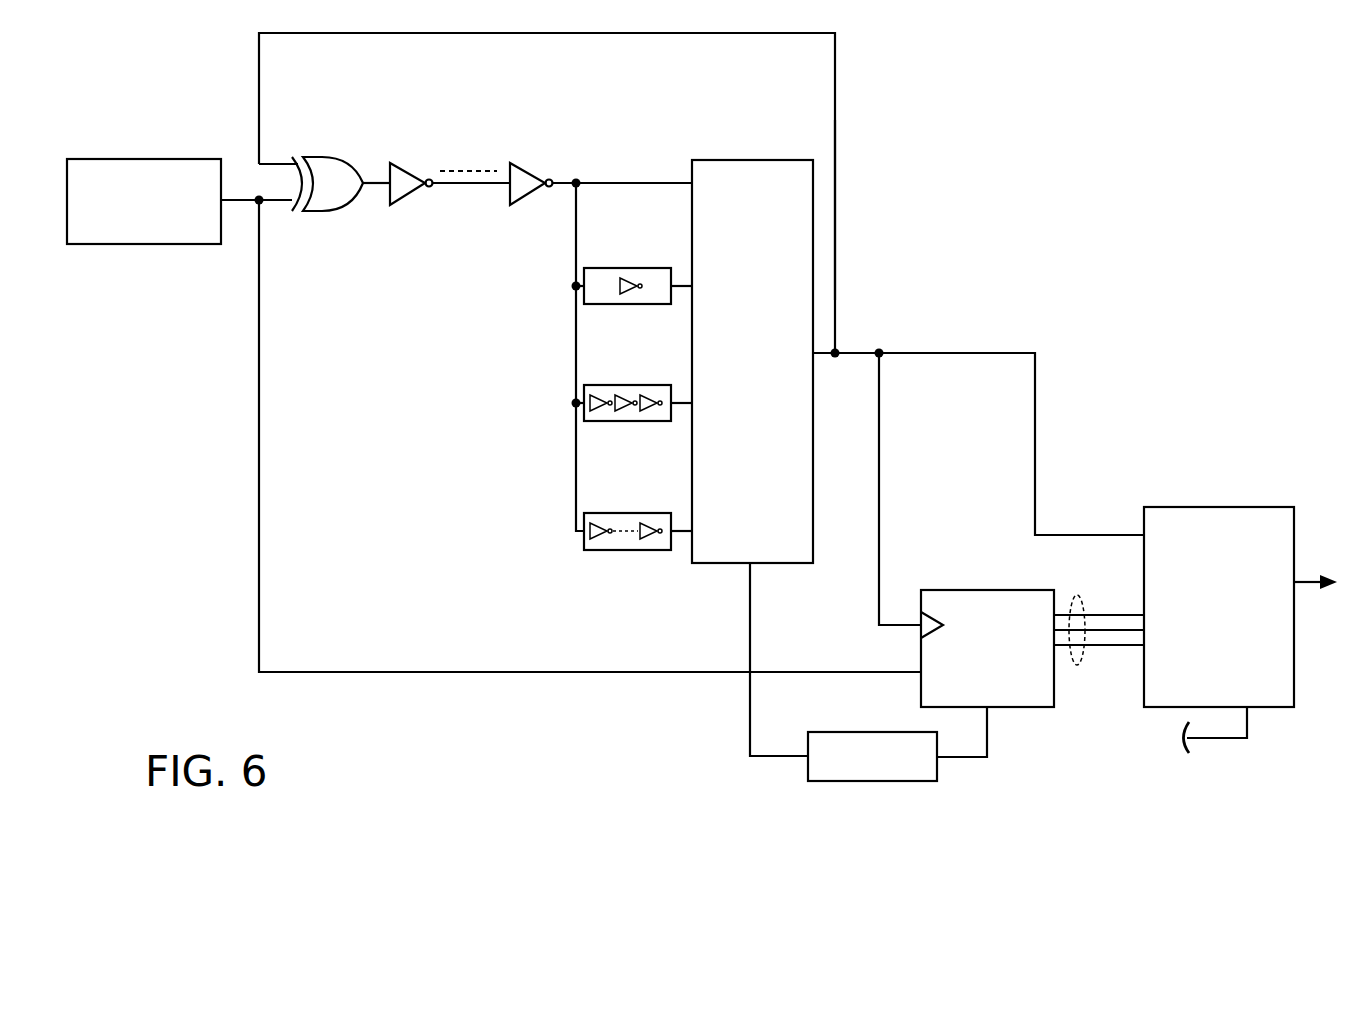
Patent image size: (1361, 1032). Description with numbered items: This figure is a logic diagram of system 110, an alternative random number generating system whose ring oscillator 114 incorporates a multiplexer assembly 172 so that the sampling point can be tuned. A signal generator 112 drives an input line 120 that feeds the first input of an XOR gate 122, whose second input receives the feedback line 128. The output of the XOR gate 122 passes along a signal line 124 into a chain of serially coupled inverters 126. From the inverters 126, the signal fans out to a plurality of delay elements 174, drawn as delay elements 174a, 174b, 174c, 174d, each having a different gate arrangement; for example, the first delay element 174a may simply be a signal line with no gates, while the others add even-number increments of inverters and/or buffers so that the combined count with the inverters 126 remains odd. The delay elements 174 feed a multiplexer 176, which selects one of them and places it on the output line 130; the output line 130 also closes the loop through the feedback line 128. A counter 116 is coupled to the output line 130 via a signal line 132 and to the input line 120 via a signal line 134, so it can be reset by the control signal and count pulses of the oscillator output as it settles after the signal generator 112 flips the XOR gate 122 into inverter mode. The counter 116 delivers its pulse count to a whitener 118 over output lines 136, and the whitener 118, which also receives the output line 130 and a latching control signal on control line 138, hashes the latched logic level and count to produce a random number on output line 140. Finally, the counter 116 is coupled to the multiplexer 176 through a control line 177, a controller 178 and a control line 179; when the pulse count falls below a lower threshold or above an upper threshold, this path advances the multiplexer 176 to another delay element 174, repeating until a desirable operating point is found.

The system 110 is at (1138, 222).
The signal generator 112 is at (103, 159).
The ring oscillator 114 is at (840, 118).
The counter 116 is at (940, 590).
The whitener 118 is at (1184, 507).
The input line 120 is at (238, 203).
The XOR gate 122 is at (312, 212).
The signal line 124 is at (370, 180).
The inverters 126 is at (548, 222).
The feedback line 128 is at (513, 34).
The output line 130 is at (1003, 353).
The signal line 132 is at (880, 410).
The signal line 134 is at (443, 672).
The output lines 136 is at (1077, 663).
The control line 138 is at (1237, 740).
The output line 140 is at (1306, 584).
The multiplexer assembly 172 is at (548, 371).
The delay elements 174 is at (688, 576).
The first delay element 174a is at (607, 183).
The second delay element 174b is at (600, 268).
The third delay element 174c is at (600, 385).
The fourth delay element 174d is at (600, 513).
The multiplexer 176 is at (715, 160).
The control line 177 is at (988, 738).
The controller 178 is at (877, 781).
The control line 179 is at (748, 710).